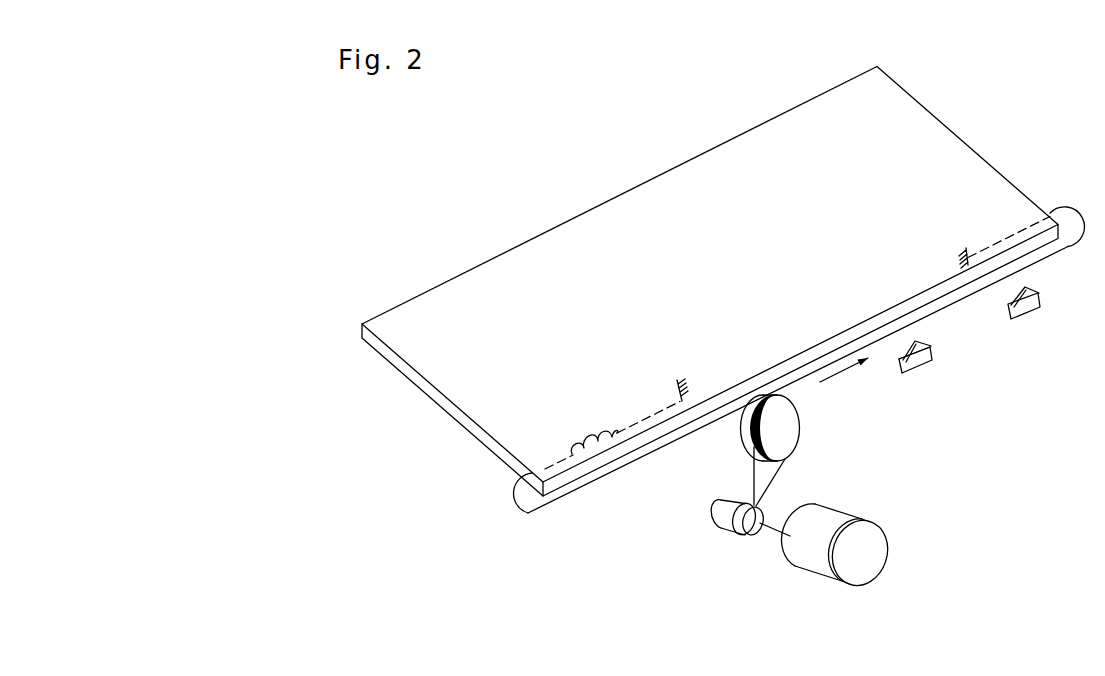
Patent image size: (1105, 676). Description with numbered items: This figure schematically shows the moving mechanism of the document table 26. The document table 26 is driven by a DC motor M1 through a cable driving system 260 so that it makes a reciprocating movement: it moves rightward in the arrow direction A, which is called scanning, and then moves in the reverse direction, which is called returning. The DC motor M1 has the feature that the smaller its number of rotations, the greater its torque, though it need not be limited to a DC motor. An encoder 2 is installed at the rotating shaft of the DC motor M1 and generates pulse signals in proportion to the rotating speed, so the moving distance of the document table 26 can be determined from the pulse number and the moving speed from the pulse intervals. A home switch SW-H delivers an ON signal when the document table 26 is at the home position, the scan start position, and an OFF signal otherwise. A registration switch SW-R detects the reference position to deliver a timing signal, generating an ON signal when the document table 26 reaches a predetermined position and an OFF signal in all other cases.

The document table 26 is at (618, 195).
The cable driving system 260 is at (690, 492).
The DC motor M1 is at (843, 511).
The encoder 2 is at (868, 521).
The arrow direction A is at (845, 370).
The registration switch SW-R is at (921, 368).
The home switch SW-H is at (1028, 313).